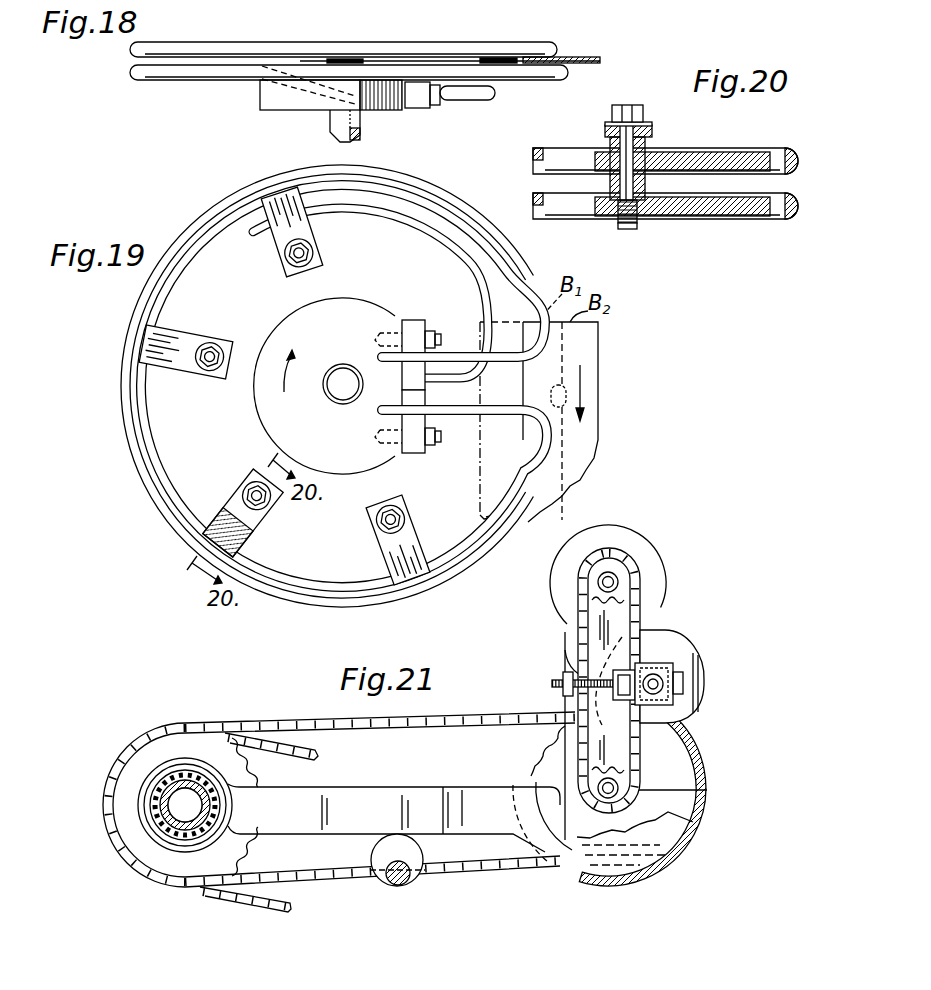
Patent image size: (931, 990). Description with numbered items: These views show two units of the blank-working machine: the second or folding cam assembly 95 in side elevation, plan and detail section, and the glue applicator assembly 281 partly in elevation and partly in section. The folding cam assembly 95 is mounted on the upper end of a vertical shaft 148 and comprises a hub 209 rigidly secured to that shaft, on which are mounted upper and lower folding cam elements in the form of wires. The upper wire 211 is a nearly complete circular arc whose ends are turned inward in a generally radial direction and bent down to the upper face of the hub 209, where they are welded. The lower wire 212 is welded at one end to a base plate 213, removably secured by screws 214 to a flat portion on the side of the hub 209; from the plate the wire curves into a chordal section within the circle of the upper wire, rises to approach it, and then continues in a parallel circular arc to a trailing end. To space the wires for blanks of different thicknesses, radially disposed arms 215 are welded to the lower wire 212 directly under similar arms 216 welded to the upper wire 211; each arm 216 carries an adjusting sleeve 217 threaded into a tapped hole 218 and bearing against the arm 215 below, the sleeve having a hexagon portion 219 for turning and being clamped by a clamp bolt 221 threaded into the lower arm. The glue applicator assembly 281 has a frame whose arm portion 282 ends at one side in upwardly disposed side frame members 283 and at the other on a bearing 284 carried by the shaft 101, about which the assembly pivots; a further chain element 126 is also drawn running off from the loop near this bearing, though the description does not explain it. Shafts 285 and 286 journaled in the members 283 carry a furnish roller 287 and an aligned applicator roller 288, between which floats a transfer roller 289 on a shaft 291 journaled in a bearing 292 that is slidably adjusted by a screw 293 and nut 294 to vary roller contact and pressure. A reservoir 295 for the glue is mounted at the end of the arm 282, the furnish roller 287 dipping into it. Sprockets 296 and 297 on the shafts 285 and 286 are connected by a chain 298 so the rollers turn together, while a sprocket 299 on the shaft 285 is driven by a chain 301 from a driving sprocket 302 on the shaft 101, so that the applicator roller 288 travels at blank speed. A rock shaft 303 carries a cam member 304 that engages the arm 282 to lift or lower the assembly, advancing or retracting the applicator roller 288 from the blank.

In FIG. 18, the folding cam assembly 95 is at (190, 165).
In FIG. 21, the shaft 101 is at (150, 820).
In FIG. 21, the chain branch 126 is at (245, 895).
In FIG. 18, the vertical shaft 148 is at (362, 122).
In FIG. 19, the vertical shaft 148 is at (342, 368).
In FIG. 18, the hub 209 is at (270, 108).
In FIG. 19, the hub 209 is at (362, 305).
In FIG. 18, the upper folding cam element 211 is at (218, 46).
In FIG. 19, the upper folding cam element 211 is at (448, 200).
In FIG. 20, the upper folding cam element 211 is at (781, 157).
In FIG. 18, the lower folding cam element 212 is at (190, 72).
In FIG. 19, the lower folding cam element 212 is at (428, 260).
In FIG. 20, the lower folding cam element 212 is at (780, 221).
In FIG. 18, the base plate 213 is at (418, 82).
In FIG. 19, the base plate 213 is at (418, 455).
In FIG. 18, the screws 214 is at (445, 88).
In FIG. 19, the screws 214 is at (414, 322).
In FIG. 20, the radially disposed arms 215 is at (718, 218).
In FIG. 19, the arms 216 is at (195, 340).
In FIG. 20, the arms 216 is at (723, 160).
In FIG. 20, the adjusting sleeve 217 is at (648, 135).
In FIG. 20, the tapped hole 218 is at (673, 157).
In FIG. 19, the hexagon portion 219 is at (255, 480).
In FIG. 20, the hexagon portion 219 is at (606, 124).
In FIG. 19, the clamp bolt 221 is at (405, 516).
In FIG. 20, the clamp bolt 221 is at (627, 105).
In FIG. 21, the glue applicator assembly 281 is at (802, 704).
In FIG. 21, the arm portion 282 is at (363, 797).
In FIG. 21, the side frame members 283 is at (615, 628).
In FIG. 21, the bearing 284 is at (160, 835).
In FIG. 21, the shaft 285 is at (612, 786).
In FIG. 21, the shaft 286 is at (620, 573).
In FIG. 21, the furnish roller 287 is at (672, 826).
In FIG. 21, the applicator roller 288 is at (637, 548).
In FIG. 21, the transfer roller 289 is at (678, 645).
In FIG. 21, the shaft 291 is at (660, 683).
In FIG. 21, the bearing 292 is at (665, 708).
In FIG. 21, the screw 293 is at (578, 660).
In FIG. 21, the nut 294 is at (560, 684).
In FIG. 21, the reservoir 295 is at (660, 870).
In FIG. 21, the sprocket 296 is at (700, 793).
In FIG. 21, the sprocket 297 is at (615, 590).
In FIG. 21, the chain 298 is at (580, 611).
In FIG. 21, the sprocket 299 is at (540, 757).
In FIG. 21, the chain 301 is at (443, 720).
In FIG. 21, the driving sprocket 302 is at (197, 740).
In FIG. 21, the rock shaft 303 is at (410, 880).
In FIG. 21, the cam member 304 is at (415, 857).